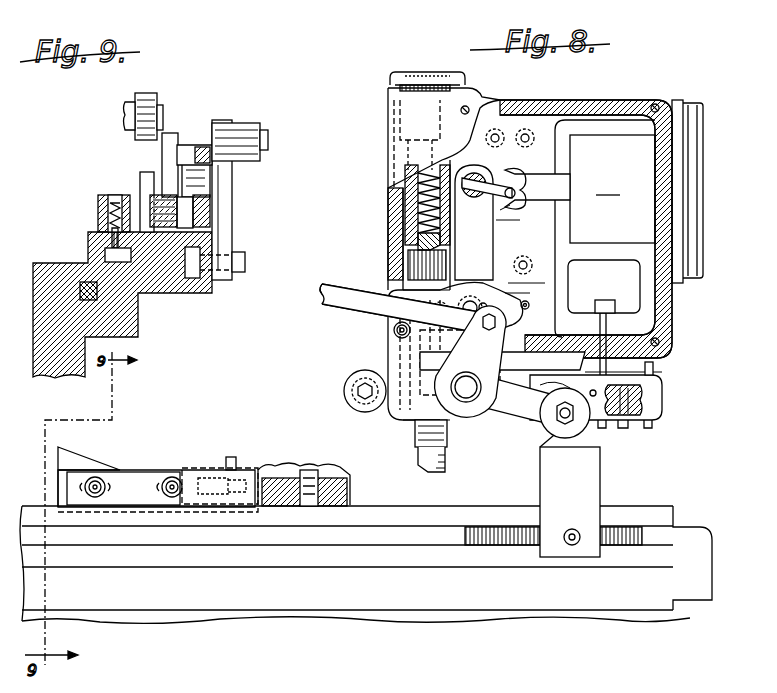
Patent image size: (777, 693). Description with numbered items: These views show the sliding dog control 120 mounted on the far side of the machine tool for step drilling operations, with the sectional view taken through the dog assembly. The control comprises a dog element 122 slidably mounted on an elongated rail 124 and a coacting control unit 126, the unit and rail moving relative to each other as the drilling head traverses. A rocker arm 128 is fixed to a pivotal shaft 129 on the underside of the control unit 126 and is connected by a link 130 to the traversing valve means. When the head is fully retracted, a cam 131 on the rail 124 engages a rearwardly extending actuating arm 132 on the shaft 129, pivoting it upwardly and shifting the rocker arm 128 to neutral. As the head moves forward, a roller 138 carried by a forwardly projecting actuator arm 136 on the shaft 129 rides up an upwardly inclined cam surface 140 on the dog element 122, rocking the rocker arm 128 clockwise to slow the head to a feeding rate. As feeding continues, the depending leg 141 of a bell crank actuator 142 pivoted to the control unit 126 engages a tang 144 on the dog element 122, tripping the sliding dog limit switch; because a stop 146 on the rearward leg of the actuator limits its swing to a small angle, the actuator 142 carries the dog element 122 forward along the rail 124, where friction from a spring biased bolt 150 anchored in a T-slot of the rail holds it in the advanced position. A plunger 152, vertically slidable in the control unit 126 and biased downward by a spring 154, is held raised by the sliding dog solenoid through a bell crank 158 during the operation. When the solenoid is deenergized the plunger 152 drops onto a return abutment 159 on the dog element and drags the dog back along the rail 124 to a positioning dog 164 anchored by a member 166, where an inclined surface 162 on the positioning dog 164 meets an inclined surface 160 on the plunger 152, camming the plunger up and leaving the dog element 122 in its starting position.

In FIG. 8, the sliding dog control 120 is at (292, 400).
In FIG. 8, the dog element 122 is at (157, 472).
In FIG. 9, the dog element 122 is at (89, 202).
In FIG. 8, the rail 124 is at (410, 593).
In FIG. 9, the rail 124 is at (150, 290).
In FIG. 8, the control unit 126 is at (379, 222).
In FIG. 8, the rocker arm 128 is at (515, 362).
In FIG. 8, the pivotal shaft 129 is at (466, 390).
In FIG. 8, the link 130 is at (362, 284).
In FIG. 8, the cam 131 is at (598, 488).
In FIG. 8, the actuating arm 132 is at (520, 430).
In FIG. 9, the actuating arm 132 is at (242, 134).
In FIG. 8, the actuator arm 136 is at (390, 415).
In FIG. 8, the roller 138 is at (350, 380).
In FIG. 9, the roller 138 is at (148, 95).
In FIG. 8, the cam surface 140 is at (92, 448).
In FIG. 9, the depending leg 141 is at (136, 150).
In FIG. 8, the bell crank actuator 142 is at (656, 406).
In FIG. 9, the tang 144 is at (150, 186).
In FIG. 8, the stop 146 is at (654, 370).
In FIG. 9, the spring biased bolt 150 is at (108, 238).
In FIG. 8, the plunger 152 is at (418, 436).
In FIG. 9, the plunger 152 is at (192, 160).
In FIG. 8, the spring 154 is at (440, 208).
In FIG. 8, the bell crank 158 is at (478, 255).
In FIG. 8, the return abutment 159 is at (202, 490).
In FIG. 8, the inclined surface 160 is at (432, 472).
In FIG. 8, the inclined surface 162 is at (190, 476).
In FIG. 8, the positioning dog 164 is at (292, 462).
In FIG. 9, the positioning dog 164 is at (200, 218).
In FIG. 8, the member 166 is at (348, 490).